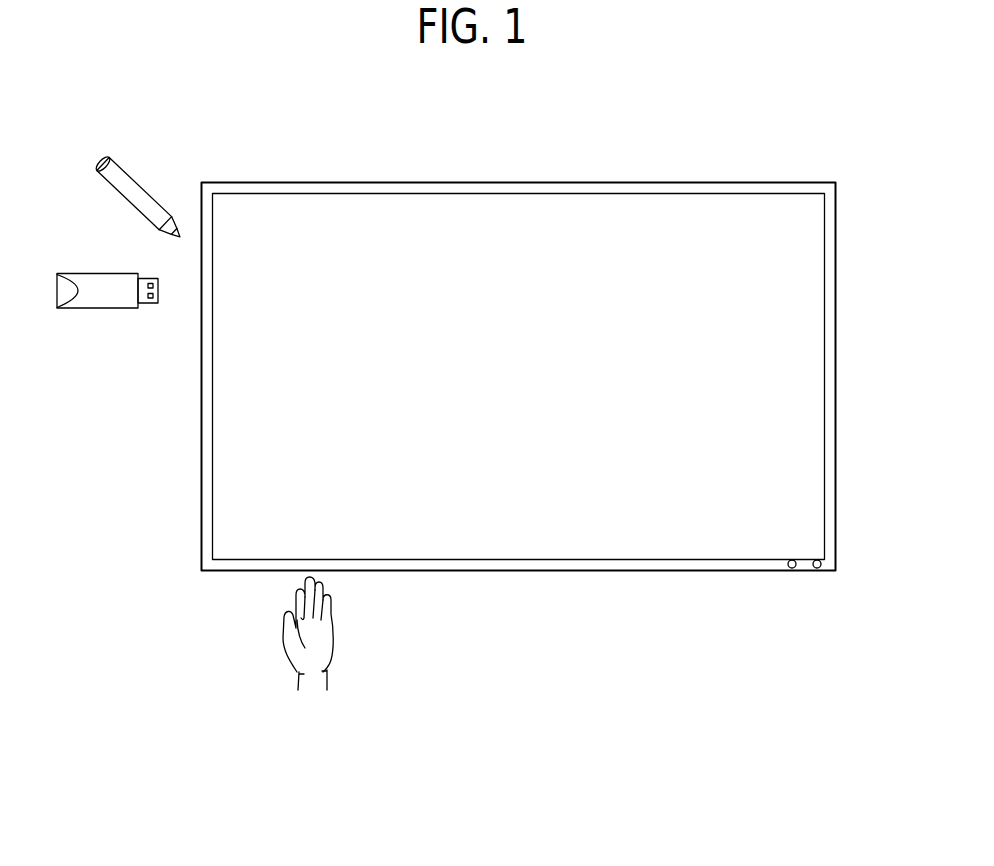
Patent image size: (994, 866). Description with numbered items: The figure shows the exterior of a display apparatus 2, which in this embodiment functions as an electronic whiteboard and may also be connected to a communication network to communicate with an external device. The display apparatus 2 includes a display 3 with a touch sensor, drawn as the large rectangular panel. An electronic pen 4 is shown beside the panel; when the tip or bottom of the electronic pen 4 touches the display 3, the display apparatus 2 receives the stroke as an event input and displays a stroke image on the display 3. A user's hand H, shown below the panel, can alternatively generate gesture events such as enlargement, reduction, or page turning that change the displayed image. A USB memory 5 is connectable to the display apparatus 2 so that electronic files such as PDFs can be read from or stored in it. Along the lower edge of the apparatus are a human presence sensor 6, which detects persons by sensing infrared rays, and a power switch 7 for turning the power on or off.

The display apparatus 2 is at (666, 163).
The display 3 is at (790, 258).
The electronic pen 4 is at (133, 202).
The USB memory 5 is at (98, 308).
The human presence sensor 6 is at (793, 571).
The power switch 7 is at (822, 571).
The user's hand H is at (298, 690).